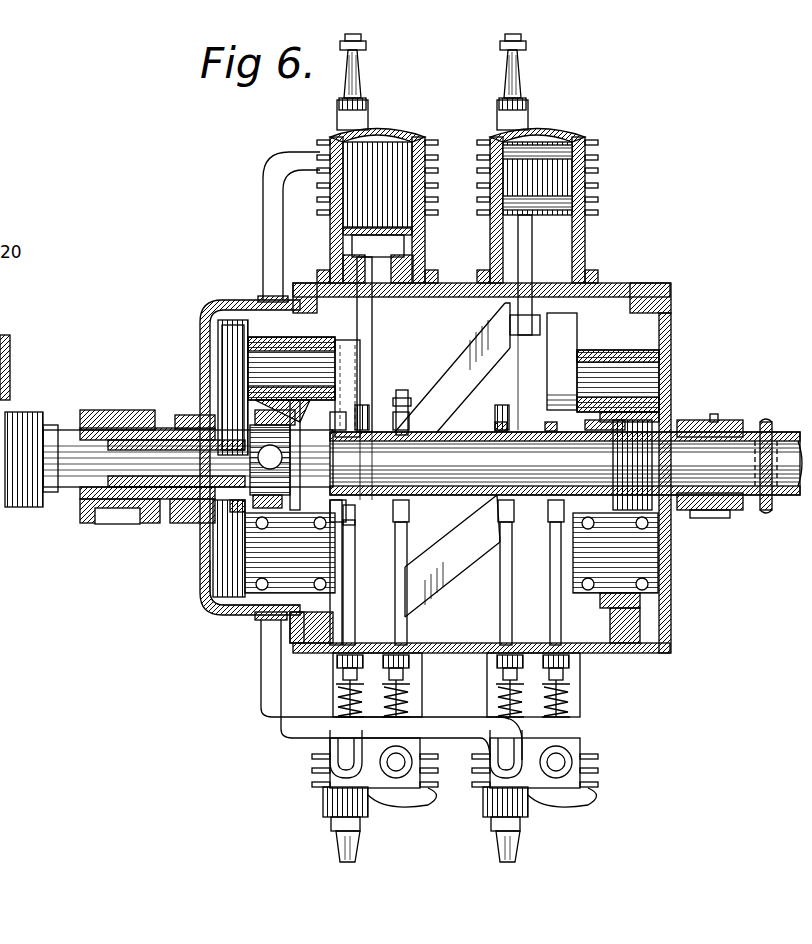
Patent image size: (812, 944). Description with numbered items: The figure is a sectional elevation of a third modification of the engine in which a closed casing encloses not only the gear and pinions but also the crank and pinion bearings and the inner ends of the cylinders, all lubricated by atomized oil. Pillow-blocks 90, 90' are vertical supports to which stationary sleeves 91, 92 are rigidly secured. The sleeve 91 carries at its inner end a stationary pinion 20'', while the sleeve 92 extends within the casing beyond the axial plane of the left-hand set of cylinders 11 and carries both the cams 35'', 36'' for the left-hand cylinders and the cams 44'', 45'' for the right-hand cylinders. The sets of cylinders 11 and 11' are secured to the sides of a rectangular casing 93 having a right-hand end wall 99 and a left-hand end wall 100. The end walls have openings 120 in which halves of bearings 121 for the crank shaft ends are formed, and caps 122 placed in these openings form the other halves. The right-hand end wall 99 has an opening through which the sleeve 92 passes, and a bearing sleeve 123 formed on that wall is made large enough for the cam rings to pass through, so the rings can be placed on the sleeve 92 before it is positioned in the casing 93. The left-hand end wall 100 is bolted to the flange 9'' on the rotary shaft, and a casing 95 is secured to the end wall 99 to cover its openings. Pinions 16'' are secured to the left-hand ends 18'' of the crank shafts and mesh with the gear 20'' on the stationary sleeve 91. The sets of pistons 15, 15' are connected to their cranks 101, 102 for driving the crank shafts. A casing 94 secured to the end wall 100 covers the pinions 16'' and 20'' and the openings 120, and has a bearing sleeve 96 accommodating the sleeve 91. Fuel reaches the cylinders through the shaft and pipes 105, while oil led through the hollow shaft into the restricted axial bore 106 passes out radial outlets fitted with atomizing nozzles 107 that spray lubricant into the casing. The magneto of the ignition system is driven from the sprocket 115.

The flange 9'' is at (221, 596).
The left-hand set of cylinders 11 is at (383, 158).
The right-hand set of cylinders 11' is at (543, 158).
The pistons 15 is at (378, 287).
The pistons 15' is at (537, 238).
The pinions 16'' is at (186, 554).
The left-hand ends of the crank shafts 18'' is at (191, 362).
The stationary pinion 20'' is at (200, 528).
The cam 35'' is at (359, 528).
The cam 36'' is at (431, 528).
The cam 44'' is at (456, 367).
The cam 45'' is at (481, 509).
The pillow-block 90 is at (169, 482).
The pillow-block 90' is at (566, 482).
The stationary sleeve 91 is at (165, 428).
The stationary sleeve 92 is at (676, 431).
The rectangular casing 93 is at (442, 653).
The casing 94 is at (200, 358).
The casing 95 is at (672, 360).
The bearing sleeve 96 is at (187, 418).
The right-hand end wall 99 is at (618, 416).
The left-hand end wall 100 is at (290, 624).
The crank 101 is at (363, 357).
The crank 102 is at (565, 340).
The pipes 105 is at (271, 167).
The axial bore 106 is at (245, 563).
The atomizing nozzles 107 is at (335, 427).
The sprocket 115 is at (769, 426).
The openings 120 is at (672, 342).
The bearings 121 is at (228, 352).
The caps 122 is at (287, 362).
The bearing sleeve 123 is at (673, 422).